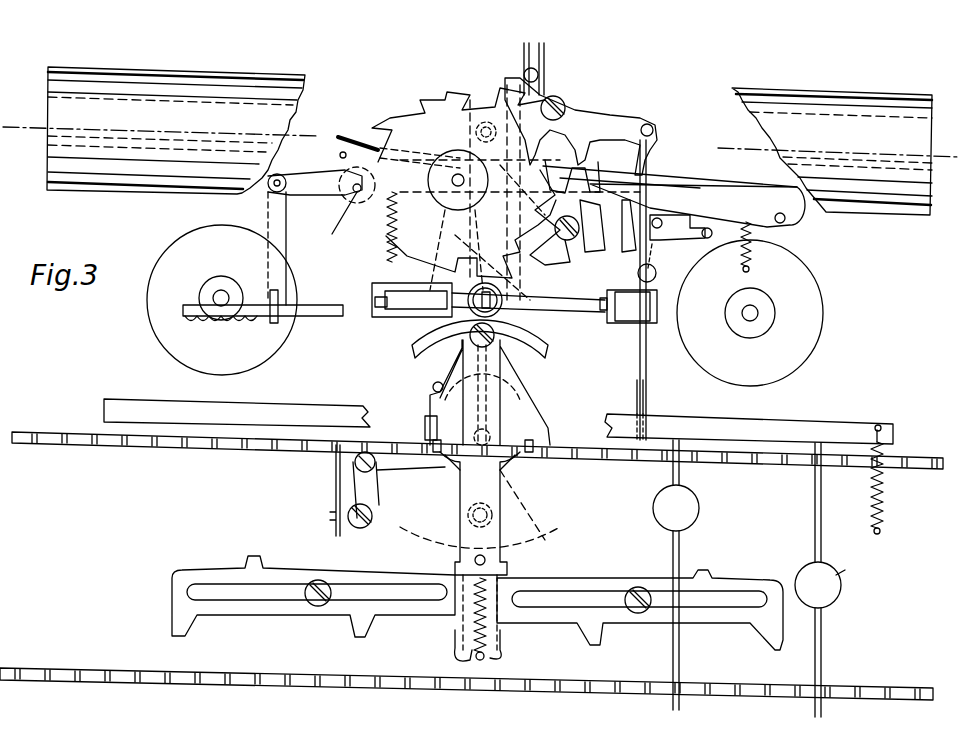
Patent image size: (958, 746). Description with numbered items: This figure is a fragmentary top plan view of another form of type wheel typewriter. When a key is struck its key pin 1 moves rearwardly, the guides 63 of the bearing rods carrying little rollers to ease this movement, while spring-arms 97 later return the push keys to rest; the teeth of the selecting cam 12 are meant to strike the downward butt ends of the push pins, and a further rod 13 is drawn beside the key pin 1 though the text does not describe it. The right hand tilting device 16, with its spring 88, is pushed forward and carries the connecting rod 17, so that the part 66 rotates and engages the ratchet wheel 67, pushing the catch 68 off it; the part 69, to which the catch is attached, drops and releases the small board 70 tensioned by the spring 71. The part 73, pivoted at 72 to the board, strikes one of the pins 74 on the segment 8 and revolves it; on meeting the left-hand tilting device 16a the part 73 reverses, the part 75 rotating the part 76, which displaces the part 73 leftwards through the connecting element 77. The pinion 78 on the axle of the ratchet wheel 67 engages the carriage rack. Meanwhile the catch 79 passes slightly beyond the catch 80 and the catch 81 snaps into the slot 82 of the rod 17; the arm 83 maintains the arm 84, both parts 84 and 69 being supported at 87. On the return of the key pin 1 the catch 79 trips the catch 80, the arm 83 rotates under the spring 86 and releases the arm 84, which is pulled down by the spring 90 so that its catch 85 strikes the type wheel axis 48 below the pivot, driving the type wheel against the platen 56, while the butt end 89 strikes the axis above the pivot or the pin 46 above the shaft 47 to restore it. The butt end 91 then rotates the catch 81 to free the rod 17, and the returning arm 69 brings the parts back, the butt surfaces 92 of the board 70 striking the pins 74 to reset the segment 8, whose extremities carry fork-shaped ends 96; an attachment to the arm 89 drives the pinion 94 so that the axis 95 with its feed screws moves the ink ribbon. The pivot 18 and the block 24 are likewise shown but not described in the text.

The key pin 1 is at (680, 557).
The segment 8 is at (540, 347).
The selecting cam 12 is at (583, 582).
The rod 13 is at (713, 564).
The right hand tilting device 16 is at (838, 424).
The left-hand tilting device 16a is at (245, 410).
The connecting rod 17 is at (645, 406).
The pivot 18 is at (340, 155).
The block 24 is at (440, 418).
The pin 46 is at (538, 306).
The shaft 47 is at (606, 322).
The axis of the type wheel 48 is at (405, 322).
The platen 56 is at (893, 92).
The guides of the bearing rods 63 is at (892, 688).
The part 66 is at (612, 122).
The ratchet wheel 67 is at (418, 110).
The catch 68 is at (590, 168).
The part (arm) 69 is at (458, 100).
The small board 70 is at (504, 90).
The spring 71 is at (500, 656).
The pivot part 72 is at (470, 342).
The part 73 is at (530, 402).
The pins 74 is at (428, 432).
The part 75 is at (336, 487).
The part 76 is at (370, 510).
The connecting element 77 is at (412, 472).
The pinion 78 is at (447, 166).
The catch 79 is at (660, 256).
The catch 80 is at (592, 240).
The catch 81 is at (622, 230).
The slot 82 is at (670, 236).
The arm 83 is at (690, 186).
The arm 84 is at (772, 190).
The catch 85 is at (360, 142).
The spring 86 is at (740, 256).
The support 87 is at (353, 197).
The spring 88 is at (886, 504).
The butt end 89 is at (545, 52).
The spring 90 is at (386, 254).
The butt end 91 is at (460, 236).
The butt surfaces 92 is at (532, 458).
The pinion 94 is at (262, 318).
The axis 95 is at (318, 318).
The fork-shaped ends 96 is at (510, 642).
The spring-arms 97 is at (268, 215).